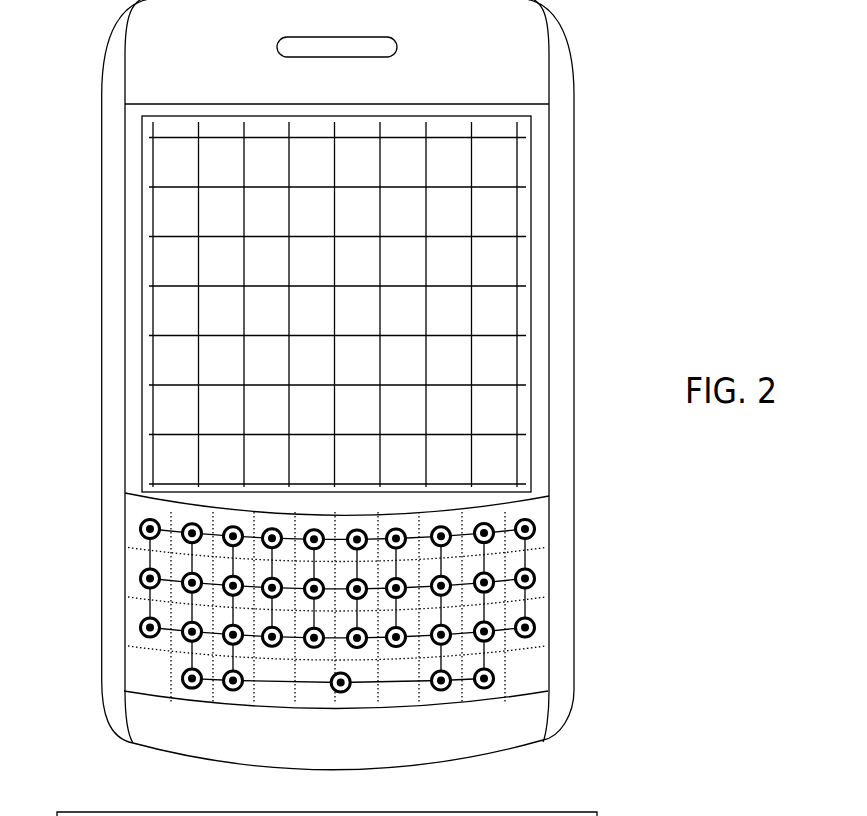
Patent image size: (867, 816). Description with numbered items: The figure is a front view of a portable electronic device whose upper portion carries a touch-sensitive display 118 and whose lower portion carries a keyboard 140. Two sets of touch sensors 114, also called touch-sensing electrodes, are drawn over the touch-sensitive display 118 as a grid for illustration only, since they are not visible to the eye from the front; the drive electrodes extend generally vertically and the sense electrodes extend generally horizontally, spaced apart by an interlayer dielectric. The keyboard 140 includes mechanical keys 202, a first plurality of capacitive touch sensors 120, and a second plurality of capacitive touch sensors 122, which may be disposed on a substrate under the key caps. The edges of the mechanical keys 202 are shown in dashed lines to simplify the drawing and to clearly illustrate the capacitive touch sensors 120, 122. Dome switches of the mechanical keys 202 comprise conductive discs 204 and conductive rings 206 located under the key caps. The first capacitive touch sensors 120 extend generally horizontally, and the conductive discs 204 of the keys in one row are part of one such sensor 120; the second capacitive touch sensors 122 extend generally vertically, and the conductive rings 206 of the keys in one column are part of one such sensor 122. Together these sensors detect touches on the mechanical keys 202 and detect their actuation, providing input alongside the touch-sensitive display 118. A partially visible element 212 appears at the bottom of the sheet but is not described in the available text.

The touch sensors 114 is at (497, 186).
The touch-sensitive display 118 is at (531, 247).
The first plurality of capacitive touch sensors 120 is at (172, 533).
The second plurality of capacitive touch sensors 122 is at (148, 559).
The keyboard 140 is at (551, 633).
The mechanical keys 202 is at (172, 680).
The conductive discs 204 is at (536, 527).
The conductive rings 206 is at (528, 518).
The circuit board 212 is at (372, 812).